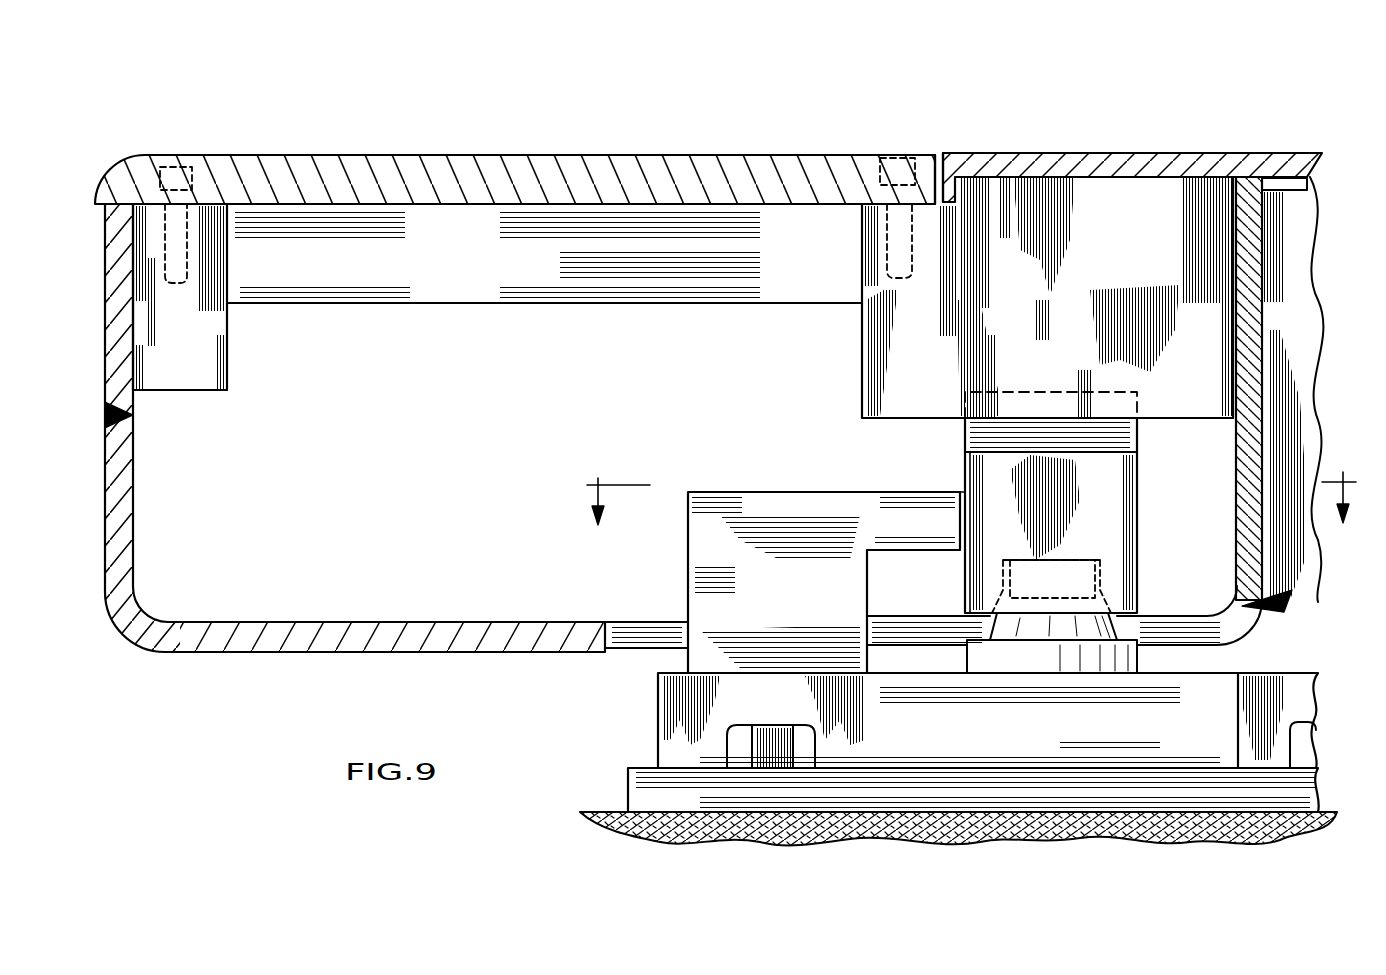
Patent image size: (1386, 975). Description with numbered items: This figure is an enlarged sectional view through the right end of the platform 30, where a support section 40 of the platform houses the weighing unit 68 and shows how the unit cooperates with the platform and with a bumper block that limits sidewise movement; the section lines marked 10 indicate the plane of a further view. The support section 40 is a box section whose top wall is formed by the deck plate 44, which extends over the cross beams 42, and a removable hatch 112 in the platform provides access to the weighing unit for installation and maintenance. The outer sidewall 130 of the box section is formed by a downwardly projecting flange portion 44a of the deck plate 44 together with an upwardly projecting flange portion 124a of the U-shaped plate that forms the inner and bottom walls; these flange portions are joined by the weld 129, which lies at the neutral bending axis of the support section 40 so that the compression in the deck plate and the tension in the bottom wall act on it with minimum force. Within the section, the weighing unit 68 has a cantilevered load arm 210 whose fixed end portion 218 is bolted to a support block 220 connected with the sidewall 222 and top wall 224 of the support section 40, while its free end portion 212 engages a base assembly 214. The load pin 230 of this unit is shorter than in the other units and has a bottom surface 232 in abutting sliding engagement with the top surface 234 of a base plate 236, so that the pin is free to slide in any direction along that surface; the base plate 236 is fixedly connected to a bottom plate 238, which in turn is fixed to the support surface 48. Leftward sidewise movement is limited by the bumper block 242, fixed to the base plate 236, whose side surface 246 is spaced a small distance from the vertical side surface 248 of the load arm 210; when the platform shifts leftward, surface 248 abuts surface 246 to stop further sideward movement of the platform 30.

The section line 10 is at (971, 512).
The platform 30 is at (648, 155).
The support section 40 is at (452, 373).
The cross beam 42 is at (1318, 270).
The deck plate 44 is at (1076, 166).
The flange portion 44a is at (128, 358).
The support surface 48 is at (582, 812).
The weighing unit 68 is at (866, 458).
The hatch 112 is at (358, 172).
The flange portion 124a is at (133, 484).
The weld 129 is at (133, 405).
The outer sidewall 130 is at (133, 443).
The load arm 210 is at (1208, 482).
The free end portion 212 is at (1128, 531).
The base assembly 214 is at (1204, 662).
The fixed end portion 218 is at (1128, 441).
The support block 220 is at (1132, 273).
The sidewall 222 is at (1237, 398).
The top wall 224 is at (990, 153).
The load pin 230 is at (1046, 656).
The bottom surface 232 is at (992, 668).
The top surface 234 is at (1164, 668).
The base plate 236 is at (1233, 688).
The bottom plate 238 is at (1260, 804).
The bumper block 242 is at (706, 585).
The side surface 246 is at (975, 500).
The vertical side surface 248 is at (965, 468).